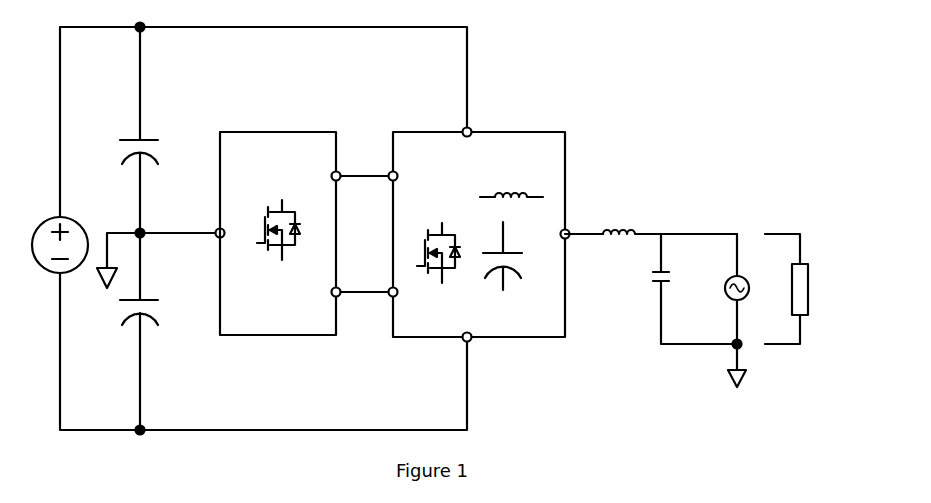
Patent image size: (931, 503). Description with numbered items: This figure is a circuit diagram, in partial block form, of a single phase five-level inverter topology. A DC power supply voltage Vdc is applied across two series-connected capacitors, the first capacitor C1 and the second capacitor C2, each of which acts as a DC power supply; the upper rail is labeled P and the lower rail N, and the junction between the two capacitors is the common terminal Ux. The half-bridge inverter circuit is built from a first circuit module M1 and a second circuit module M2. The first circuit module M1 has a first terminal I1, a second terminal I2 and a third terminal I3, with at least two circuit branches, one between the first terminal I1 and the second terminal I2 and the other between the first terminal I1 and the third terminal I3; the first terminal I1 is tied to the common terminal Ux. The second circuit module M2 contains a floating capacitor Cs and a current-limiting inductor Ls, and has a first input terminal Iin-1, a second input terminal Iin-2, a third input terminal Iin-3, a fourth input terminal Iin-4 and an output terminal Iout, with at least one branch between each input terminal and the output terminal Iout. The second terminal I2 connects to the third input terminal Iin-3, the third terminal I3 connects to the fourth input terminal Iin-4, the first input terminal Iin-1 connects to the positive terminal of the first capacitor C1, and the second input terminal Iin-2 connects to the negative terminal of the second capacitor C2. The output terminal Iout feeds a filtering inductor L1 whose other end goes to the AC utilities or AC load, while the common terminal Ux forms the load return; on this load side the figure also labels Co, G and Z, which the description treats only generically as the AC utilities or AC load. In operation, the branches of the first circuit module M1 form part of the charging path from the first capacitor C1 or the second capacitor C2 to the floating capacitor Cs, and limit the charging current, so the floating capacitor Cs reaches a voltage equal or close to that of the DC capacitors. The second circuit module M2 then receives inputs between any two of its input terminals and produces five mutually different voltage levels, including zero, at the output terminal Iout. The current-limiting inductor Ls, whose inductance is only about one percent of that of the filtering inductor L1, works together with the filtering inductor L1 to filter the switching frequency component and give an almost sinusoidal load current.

The positive DC rail node P is at (130, 44).
The negative DC rail node N is at (128, 417).
The first capacitor C1 is at (123, 150).
The second capacitor C2 is at (123, 317).
The DC power supply voltage Vdc is at (68, 229).
The common terminal Ux is at (136, 259).
The first terminal I1 is at (192, 247).
The first circuit module M1 is at (272, 128).
The second circuit module M2 is at (505, 128).
The second terminal I2 is at (350, 178).
The third terminal I3 is at (350, 290).
The first input terminal Iin-1 is at (468, 149).
The second input terminal Iin-2 is at (473, 321).
The third input terminal Iin-3 is at (413, 183).
The fourth input terminal Iin-4 is at (415, 296).
The current-limiting inductor Ls is at (511, 178).
The floating capacitor Cs is at (517, 256).
The output terminal Iout is at (582, 220).
The filtering inductor L1 is at (670, 251).
The output filter capacitor Co is at (682, 289).
The grid / AC voltage source G is at (723, 310).
The load impedance Z is at (800, 289).